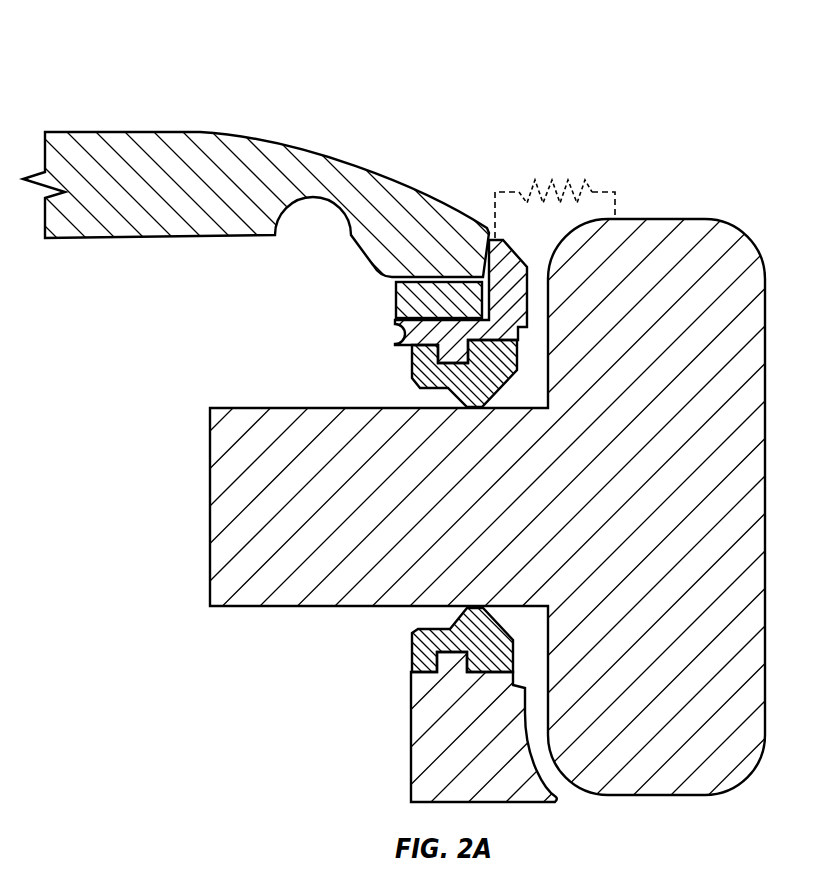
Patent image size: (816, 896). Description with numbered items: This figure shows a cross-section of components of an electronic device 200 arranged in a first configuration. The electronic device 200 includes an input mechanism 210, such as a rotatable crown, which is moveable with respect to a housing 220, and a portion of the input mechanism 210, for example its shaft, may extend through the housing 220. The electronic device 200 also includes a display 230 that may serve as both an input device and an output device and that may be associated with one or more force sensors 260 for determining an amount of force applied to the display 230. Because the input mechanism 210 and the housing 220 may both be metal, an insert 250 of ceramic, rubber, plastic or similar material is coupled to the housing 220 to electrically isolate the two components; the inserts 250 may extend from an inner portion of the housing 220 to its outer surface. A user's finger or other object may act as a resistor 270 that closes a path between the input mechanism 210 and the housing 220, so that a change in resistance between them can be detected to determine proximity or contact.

The electronic device 200 is at (218, 80).
The input mechanism 210 is at (648, 219).
The housing 220 is at (490, 231).
The display 230 is at (137, 132).
The insert 250 is at (400, 355).
The force sensor 260 is at (395, 302).
The resistor 270 is at (509, 190).